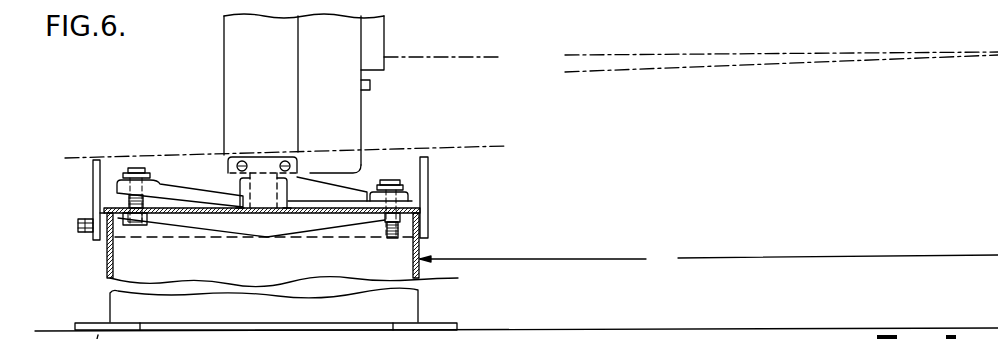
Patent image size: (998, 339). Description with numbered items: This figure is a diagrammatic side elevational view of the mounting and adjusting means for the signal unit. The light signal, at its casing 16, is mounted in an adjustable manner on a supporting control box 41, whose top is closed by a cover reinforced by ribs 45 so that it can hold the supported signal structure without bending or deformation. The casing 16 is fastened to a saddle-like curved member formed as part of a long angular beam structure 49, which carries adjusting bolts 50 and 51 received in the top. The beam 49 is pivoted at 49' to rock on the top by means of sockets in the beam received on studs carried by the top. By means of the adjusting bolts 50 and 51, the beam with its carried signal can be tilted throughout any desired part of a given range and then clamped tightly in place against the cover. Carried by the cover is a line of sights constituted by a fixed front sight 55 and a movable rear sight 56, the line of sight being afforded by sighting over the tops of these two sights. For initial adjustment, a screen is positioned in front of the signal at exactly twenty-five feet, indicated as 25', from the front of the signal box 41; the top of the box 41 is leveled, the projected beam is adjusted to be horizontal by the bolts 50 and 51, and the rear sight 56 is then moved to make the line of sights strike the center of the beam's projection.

The casing 16 is at (224, 116).
The adjusting bolt 51 is at (135, 168).
The movable rear sight 56 is at (93, 189).
The supporting control box 41 is at (108, 259).
The ribs 45 is at (203, 226).
The long angular beam structure 49 is at (350, 178).
The pivot of the beam 49' is at (265, 238).
The adjusting bolt 50 is at (403, 186).
The fixed front sight 55 is at (424, 197).
The 25 feet distance 25' is at (709, 257).